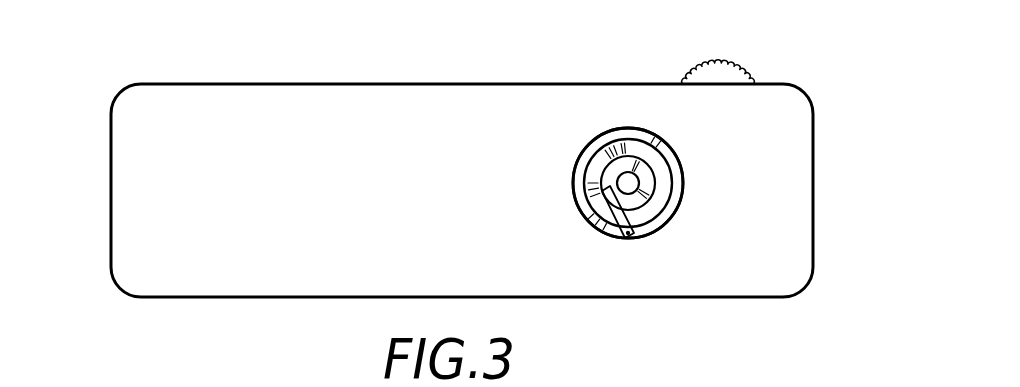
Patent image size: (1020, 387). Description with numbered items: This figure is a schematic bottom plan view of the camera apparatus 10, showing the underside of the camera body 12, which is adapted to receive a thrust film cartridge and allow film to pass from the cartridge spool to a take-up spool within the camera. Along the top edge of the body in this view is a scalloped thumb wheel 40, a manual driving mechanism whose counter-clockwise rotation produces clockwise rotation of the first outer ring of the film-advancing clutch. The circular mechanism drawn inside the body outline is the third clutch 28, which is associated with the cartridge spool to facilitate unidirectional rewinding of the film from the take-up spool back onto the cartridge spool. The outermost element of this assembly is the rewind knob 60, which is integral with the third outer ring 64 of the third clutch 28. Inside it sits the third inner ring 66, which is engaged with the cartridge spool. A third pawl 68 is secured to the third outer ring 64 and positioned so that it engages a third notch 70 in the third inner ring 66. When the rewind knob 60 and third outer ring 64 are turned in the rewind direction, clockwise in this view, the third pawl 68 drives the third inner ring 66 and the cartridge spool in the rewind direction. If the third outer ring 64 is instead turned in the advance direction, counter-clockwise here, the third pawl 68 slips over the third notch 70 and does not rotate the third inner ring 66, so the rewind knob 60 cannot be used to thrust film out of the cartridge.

The apparatus 10 is at (827, 190).
The camera body 12 is at (128, 87).
The third clutch 28 is at (582, 140).
The thumb wheel 40 is at (737, 66).
The rewind knob 60 is at (655, 136).
The third outer ring 64 is at (680, 166).
The third inner ring 66 is at (653, 204).
The third pawl 68 is at (610, 216).
The third notch 70 is at (606, 201).